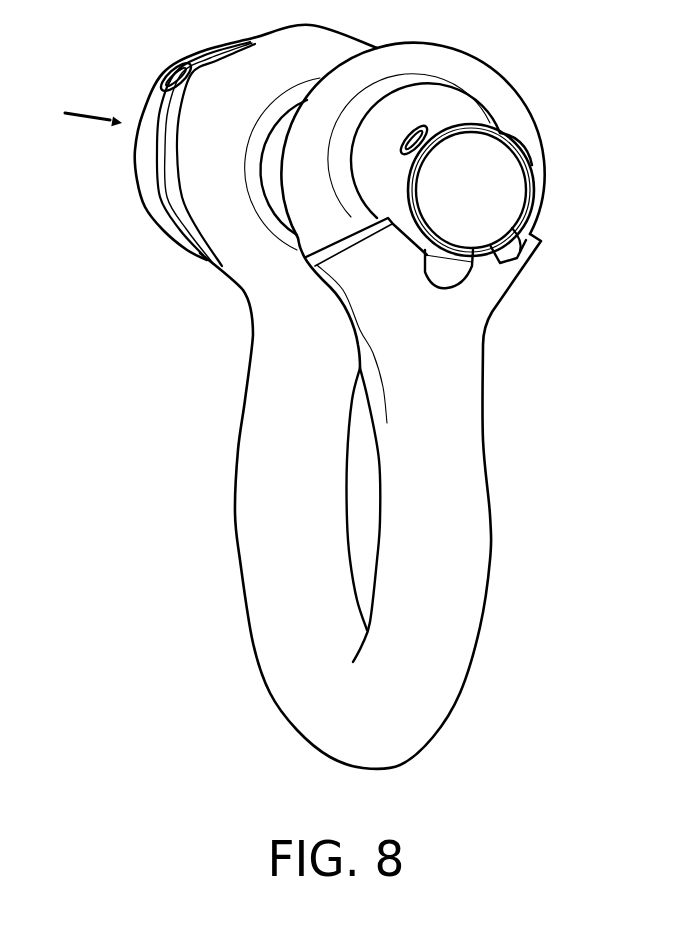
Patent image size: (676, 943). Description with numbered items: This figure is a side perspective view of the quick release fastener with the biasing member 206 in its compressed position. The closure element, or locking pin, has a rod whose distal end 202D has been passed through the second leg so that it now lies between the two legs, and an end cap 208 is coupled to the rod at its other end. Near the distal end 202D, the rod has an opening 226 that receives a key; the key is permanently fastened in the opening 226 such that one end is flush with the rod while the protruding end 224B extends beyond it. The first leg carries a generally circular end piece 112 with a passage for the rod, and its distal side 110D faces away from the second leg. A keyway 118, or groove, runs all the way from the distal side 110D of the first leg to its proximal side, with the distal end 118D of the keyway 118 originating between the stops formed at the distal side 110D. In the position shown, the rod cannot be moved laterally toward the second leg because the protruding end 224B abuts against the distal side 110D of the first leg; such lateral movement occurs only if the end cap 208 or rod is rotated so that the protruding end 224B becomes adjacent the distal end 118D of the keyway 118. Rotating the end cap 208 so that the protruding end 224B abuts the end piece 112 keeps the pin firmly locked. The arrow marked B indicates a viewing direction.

The end cap 208 is at (207, 52).
The biasing member 206 is at (156, 196).
The opening 226 is at (394, 120).
The end piece 112 is at (452, 63).
The distal end 202D is at (507, 185).
The protruding end 224B is at (513, 250).
The distal end of keyway 118D is at (453, 275).
The keyway 118 is at (419, 293).
The distal side 110D is at (460, 369).
The view direction arrow B is at (80, 123).